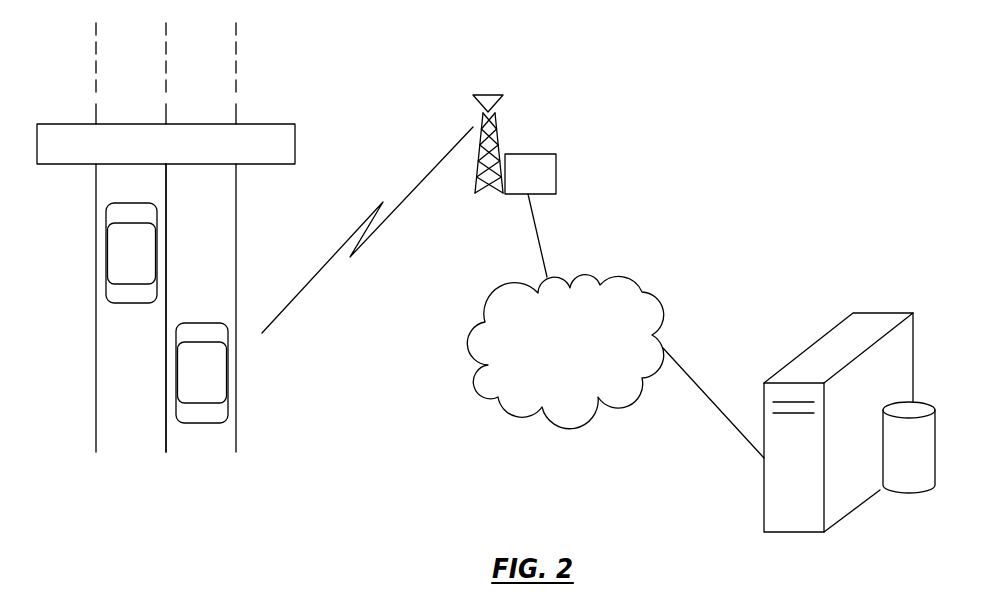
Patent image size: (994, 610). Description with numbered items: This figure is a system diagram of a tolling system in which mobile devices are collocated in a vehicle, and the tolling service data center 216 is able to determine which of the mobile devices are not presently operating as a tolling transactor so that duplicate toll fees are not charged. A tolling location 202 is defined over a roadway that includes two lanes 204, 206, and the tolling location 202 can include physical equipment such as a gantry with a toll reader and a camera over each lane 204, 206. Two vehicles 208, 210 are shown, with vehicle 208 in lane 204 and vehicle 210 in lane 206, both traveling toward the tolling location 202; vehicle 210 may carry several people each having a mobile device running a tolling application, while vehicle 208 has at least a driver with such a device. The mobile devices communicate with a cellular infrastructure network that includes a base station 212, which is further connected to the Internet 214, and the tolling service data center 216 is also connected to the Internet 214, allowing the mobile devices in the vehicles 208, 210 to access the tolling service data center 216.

The tolling location 202 is at (297, 135).
The lane 204 is at (139, 448).
The lane 206 is at (203, 455).
The vehicle 208 is at (106, 263).
The vehicle 210 is at (228, 384).
The base station 212 is at (556, 160).
The Internet 214 is at (582, 353).
The tolling service data center 216 is at (878, 313).